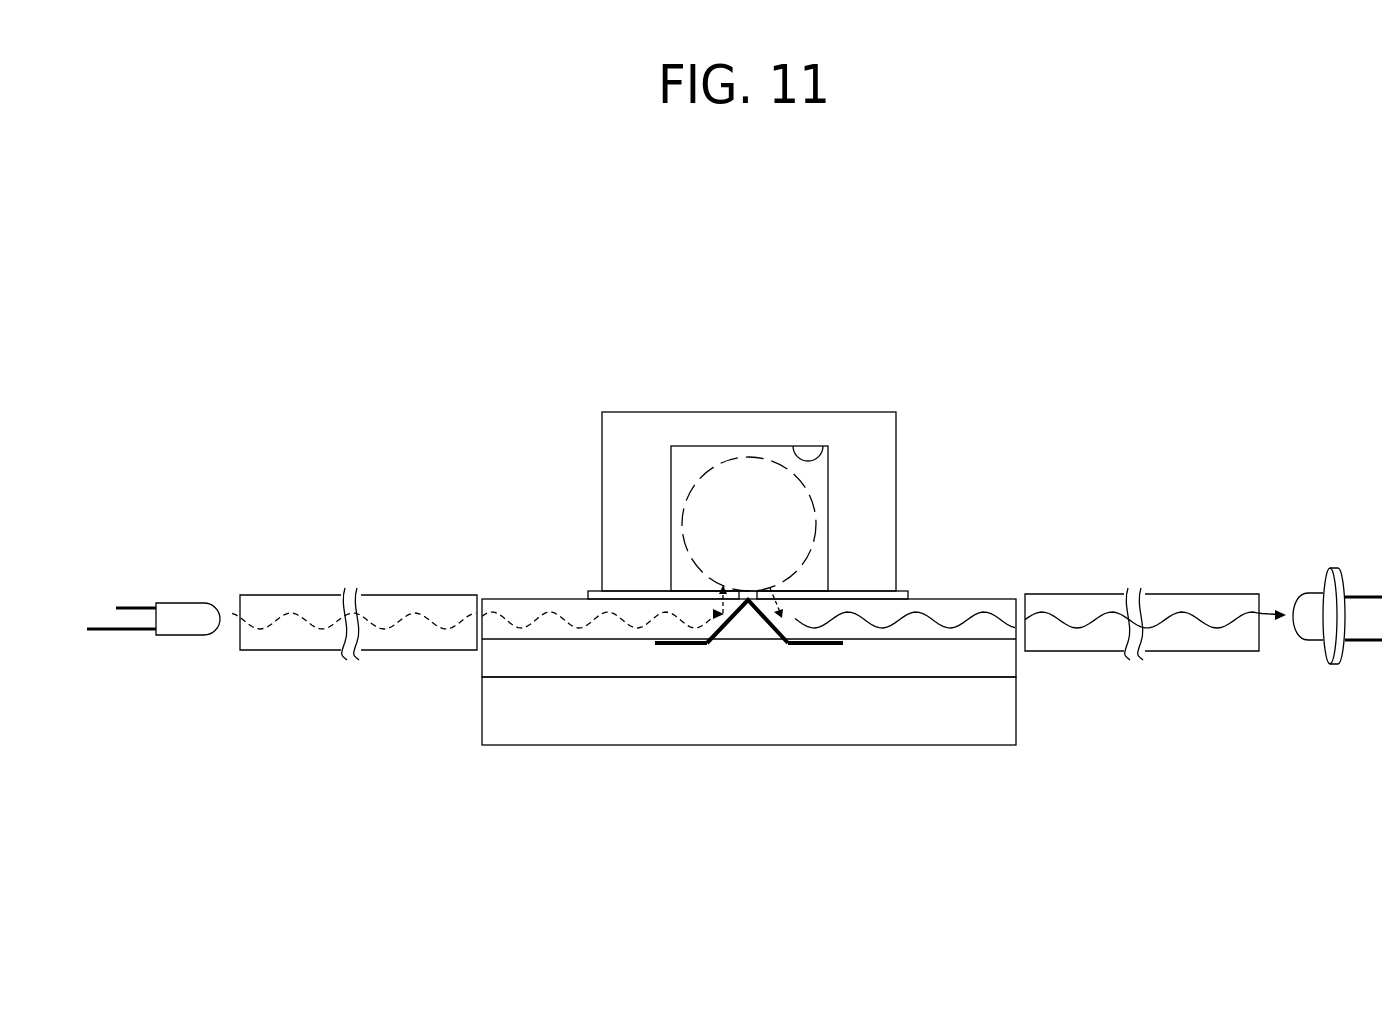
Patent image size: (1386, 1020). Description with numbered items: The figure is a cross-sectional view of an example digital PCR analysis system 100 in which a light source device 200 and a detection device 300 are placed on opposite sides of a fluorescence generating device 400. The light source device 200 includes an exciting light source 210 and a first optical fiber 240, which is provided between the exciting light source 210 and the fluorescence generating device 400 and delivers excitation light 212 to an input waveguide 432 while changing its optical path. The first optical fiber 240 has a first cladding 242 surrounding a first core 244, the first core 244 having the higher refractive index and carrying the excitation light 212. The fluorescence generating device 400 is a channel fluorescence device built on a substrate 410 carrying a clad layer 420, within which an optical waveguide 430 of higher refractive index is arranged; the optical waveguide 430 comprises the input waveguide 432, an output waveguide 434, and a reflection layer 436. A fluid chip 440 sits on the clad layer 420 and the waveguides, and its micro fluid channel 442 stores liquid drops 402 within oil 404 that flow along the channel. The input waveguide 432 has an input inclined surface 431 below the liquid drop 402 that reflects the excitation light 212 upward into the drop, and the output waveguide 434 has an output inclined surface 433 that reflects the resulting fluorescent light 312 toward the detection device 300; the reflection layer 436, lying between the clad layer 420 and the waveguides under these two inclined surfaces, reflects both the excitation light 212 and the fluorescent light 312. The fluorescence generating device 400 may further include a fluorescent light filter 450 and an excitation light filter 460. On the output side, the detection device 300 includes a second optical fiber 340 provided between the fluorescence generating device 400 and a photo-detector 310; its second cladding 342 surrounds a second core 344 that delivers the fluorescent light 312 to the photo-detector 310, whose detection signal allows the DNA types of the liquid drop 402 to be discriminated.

The digital PCR analysis system 100 is at (1122, 366).
The light source device 200 is at (174, 463).
The exciting light source 210 is at (183, 618).
The excitation light 212 is at (320, 630).
The first optical fiber 240 is at (249, 508).
The first cladding 242 is at (270, 608).
The first core 244 is at (403, 608).
The detection device 300 is at (1127, 463).
The photo-detector 310 is at (1310, 590).
The fluorescent light 312 is at (1212, 630).
The second optical fiber 340 is at (1058, 506).
The second cladding 342 is at (1078, 608).
The second core 344 is at (1211, 608).
The fluorescence generating device 400 is at (891, 321).
The liquid drop 402 is at (753, 480).
The oil 404 is at (688, 454).
The substrate 410 is at (1016, 706).
The clad layer 420 is at (1016, 660).
The optical waveguide 430 is at (491, 520).
The input inclined surface 431 is at (706, 630).
The input waveguide 432 is at (653, 608).
The output inclined surface 433 is at (787, 630).
The output waveguide 434 is at (855, 604).
The reflection layer 436 is at (752, 610).
The fluid chip 440 is at (642, 427).
The micro fluid channel 442 is at (822, 446).
The fluorescent light filter 450 is at (558, 607).
The excitation light filter 460 is at (943, 610).